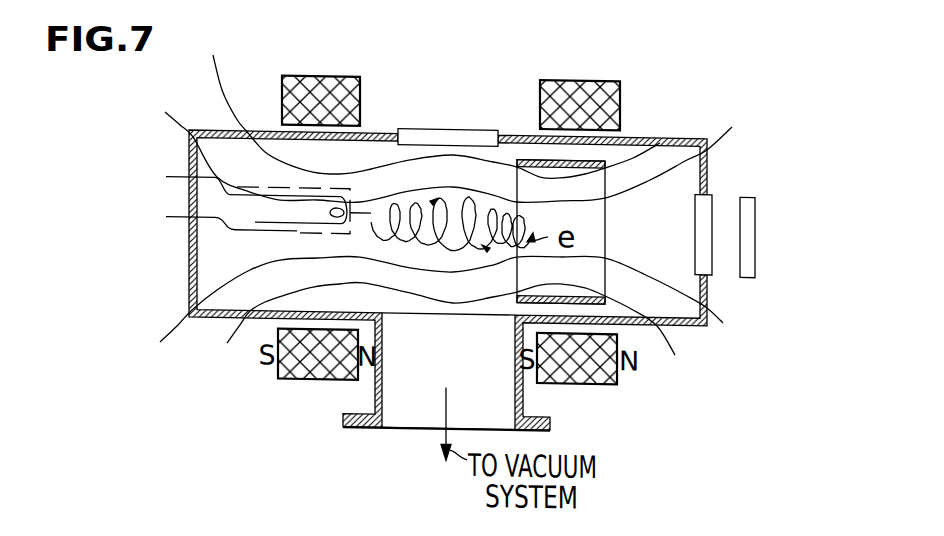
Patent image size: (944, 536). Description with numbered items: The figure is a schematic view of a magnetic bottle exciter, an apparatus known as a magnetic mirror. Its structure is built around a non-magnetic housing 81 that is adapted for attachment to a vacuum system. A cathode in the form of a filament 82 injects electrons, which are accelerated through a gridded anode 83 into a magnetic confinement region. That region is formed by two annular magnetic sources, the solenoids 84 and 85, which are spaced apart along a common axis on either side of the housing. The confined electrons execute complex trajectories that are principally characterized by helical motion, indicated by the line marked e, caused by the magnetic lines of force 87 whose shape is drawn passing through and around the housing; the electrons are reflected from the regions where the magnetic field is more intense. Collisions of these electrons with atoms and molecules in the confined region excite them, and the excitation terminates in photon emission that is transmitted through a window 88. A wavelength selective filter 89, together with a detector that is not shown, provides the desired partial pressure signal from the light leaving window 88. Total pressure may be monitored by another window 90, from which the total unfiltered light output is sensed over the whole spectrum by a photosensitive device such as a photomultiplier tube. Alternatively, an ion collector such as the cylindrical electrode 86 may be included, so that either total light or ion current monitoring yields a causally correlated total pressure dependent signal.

The non-magnetic housing 81 is at (189, 260).
The filament 82 is at (241, 188).
The gridded anode 83 is at (243, 210).
The solenoid 84 is at (321, 74).
The solenoid 85 is at (585, 74).
The cylindrical electrode 86 is at (605, 228).
The magnetic lines of force 87 is at (660, 135).
The window 88 is at (712, 186).
The wavelength selective filter 89 is at (752, 188).
The window 90 is at (450, 124).